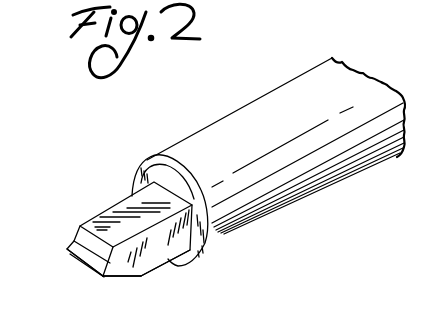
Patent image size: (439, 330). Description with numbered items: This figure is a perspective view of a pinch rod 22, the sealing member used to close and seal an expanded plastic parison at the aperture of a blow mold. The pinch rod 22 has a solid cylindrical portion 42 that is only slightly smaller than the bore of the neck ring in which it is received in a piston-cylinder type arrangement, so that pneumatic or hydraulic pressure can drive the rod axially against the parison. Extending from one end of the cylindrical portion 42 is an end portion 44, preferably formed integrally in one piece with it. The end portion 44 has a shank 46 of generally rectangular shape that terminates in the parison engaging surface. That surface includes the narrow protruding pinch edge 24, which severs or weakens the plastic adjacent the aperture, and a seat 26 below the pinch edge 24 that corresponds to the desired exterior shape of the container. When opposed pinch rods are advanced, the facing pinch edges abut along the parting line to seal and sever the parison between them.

The pinch rod 22 is at (150, 150).
The pinch edge 24 is at (70, 256).
The seat surface 26 is at (121, 278).
The solid cylindrical portion 42 is at (363, 166).
The end portion 44 is at (95, 190).
The shank 46 is at (148, 257).